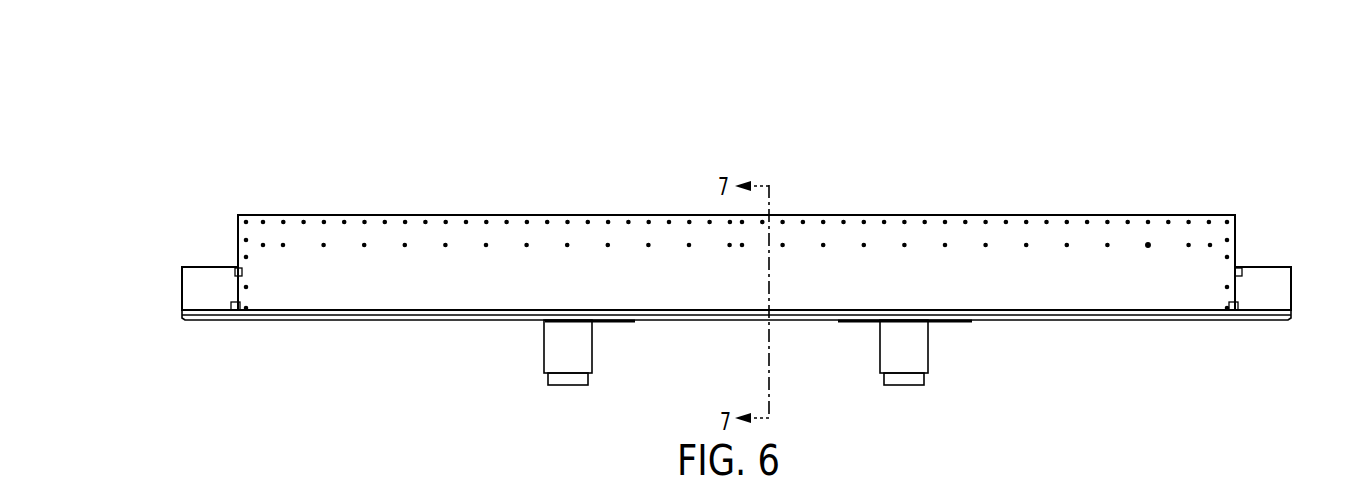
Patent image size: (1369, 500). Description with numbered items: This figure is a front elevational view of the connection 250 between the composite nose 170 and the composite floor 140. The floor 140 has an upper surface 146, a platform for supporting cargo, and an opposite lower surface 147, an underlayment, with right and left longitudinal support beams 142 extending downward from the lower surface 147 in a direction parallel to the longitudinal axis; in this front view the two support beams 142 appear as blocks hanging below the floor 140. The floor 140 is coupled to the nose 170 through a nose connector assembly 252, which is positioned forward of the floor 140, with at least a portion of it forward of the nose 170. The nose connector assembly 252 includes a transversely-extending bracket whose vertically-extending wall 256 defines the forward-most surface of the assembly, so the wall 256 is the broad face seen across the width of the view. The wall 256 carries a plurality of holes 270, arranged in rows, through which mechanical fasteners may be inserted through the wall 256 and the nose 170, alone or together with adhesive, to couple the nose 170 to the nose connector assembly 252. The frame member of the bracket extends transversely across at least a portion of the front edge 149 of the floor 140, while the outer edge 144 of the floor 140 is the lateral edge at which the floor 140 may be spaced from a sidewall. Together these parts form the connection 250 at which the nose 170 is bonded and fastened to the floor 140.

The connection 250 is at (688, 124).
The nose connector assembly 252 is at (880, 196).
The holes 270 is at (518, 235).
The vertically-extending wall 256 is at (1157, 237).
The outer edge 144 is at (181, 297).
The front edge 149 is at (192, 297).
The floor 140 is at (1283, 287).
The upper surface 146 is at (1253, 267).
The lower surface 147 is at (1083, 322).
The longitudinal support beams 142 is at (556, 354).
The nose 170 is at (299, 494).